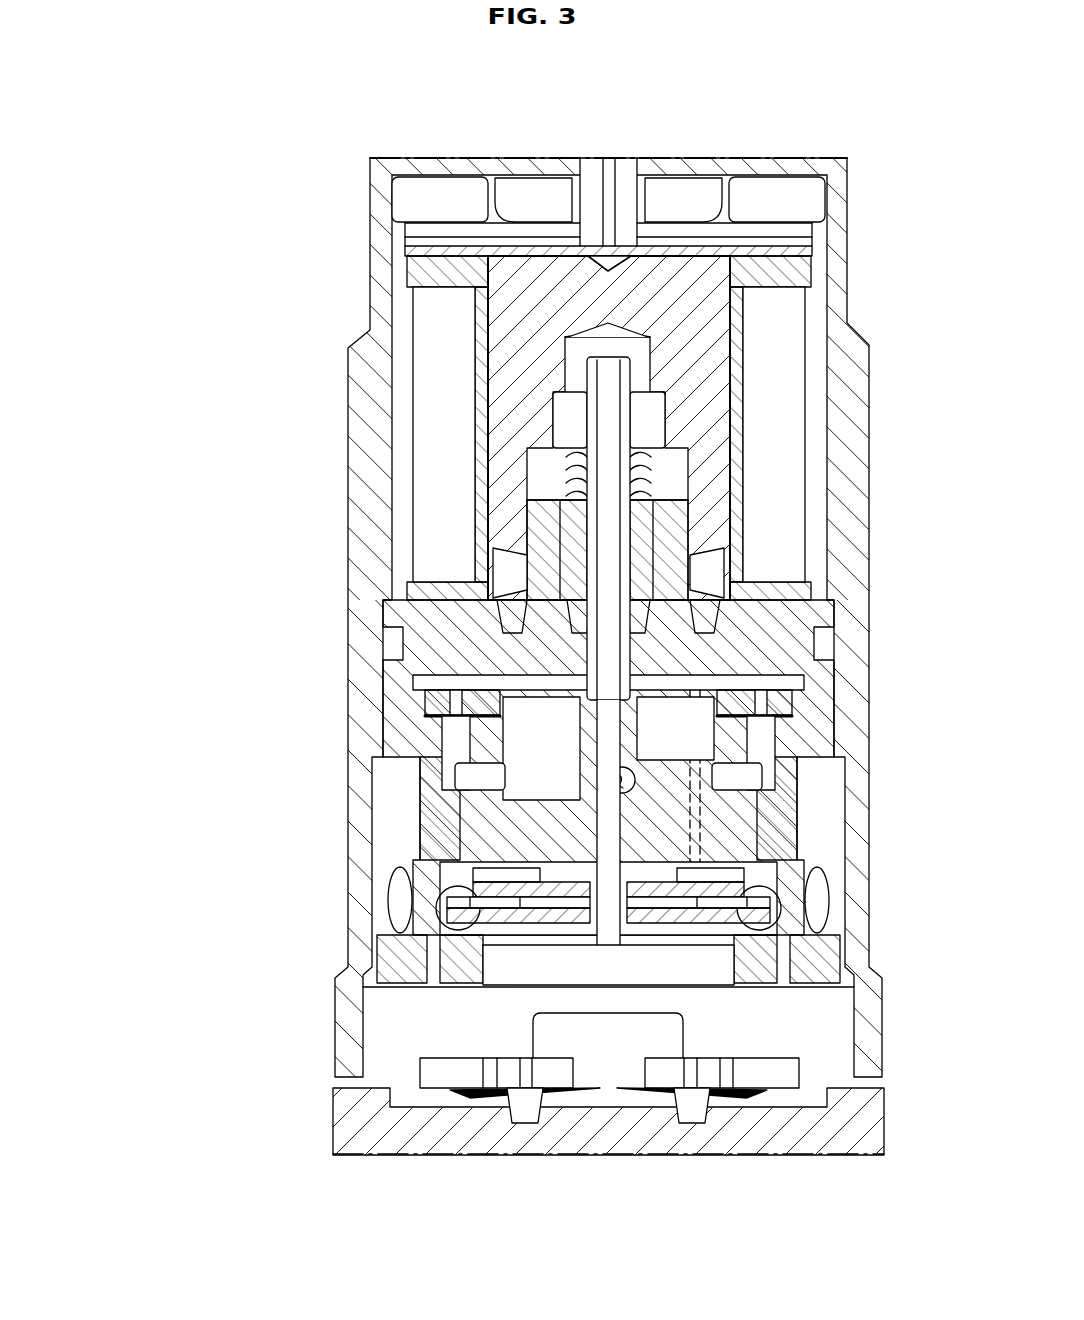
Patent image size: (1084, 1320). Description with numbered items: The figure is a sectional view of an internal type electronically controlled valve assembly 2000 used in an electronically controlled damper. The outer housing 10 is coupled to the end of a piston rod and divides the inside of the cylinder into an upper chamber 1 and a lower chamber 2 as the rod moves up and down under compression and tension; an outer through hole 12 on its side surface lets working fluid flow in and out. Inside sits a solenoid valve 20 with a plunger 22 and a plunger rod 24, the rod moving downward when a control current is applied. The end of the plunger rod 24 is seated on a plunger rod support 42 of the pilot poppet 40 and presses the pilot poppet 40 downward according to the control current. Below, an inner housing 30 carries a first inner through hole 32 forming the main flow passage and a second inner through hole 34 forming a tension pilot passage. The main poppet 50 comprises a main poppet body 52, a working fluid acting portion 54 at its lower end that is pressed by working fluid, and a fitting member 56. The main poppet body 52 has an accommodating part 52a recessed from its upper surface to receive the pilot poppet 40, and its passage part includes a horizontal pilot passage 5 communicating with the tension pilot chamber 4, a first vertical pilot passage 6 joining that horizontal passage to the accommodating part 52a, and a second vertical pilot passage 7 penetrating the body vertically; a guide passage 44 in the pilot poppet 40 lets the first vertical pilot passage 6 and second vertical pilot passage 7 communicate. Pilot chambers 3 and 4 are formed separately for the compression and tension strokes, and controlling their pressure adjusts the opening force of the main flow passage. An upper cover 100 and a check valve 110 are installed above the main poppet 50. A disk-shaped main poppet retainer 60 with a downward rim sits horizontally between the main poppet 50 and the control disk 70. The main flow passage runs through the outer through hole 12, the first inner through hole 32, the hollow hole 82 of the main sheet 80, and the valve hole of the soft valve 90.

The internal type electronically controlled valve assembly 2000 is at (145, 206).
The upper chamber 1 is at (884, 199).
The lower chamber 2 is at (349, 1233).
The pilot chamber 3 is at (762, 668).
The tension pilot chamber 4 is at (625, 785).
The horizontal pilot passage 5 is at (735, 833).
The first vertical pilot passage 6 is at (735, 767).
The second vertical pilot passage 7 is at (748, 712).
The outer housing 10 is at (370, 233).
The outer through hole 12 is at (860, 908).
The solenoid valve 20 is at (486, 322).
The plunger 22 is at (640, 525).
The plunger rod 24 is at (608, 384).
The inner housing 30 is at (420, 815).
The first inner through hole 32 is at (398, 902).
The second inner through hole 34 is at (470, 785).
The pilot poppet 40 is at (573, 690).
The plunger rod support 42 is at (700, 640).
The guide passage 44 is at (555, 738).
The main poppet 50 is at (755, 838).
The main poppet body 52 is at (740, 955).
The accommodating part 52a is at (455, 752).
The working fluid acting portion 54 is at (840, 892).
The fitting member 56 is at (612, 925).
The main poppet retainer 60 is at (485, 888).
The control disk 70 is at (450, 910).
The main sheet 80 is at (438, 963).
The hollow hole 82 is at (527, 955).
The soft valve 90 is at (330, 1125).
The upper cover 100 is at (430, 693).
The check valve 110 is at (795, 700).